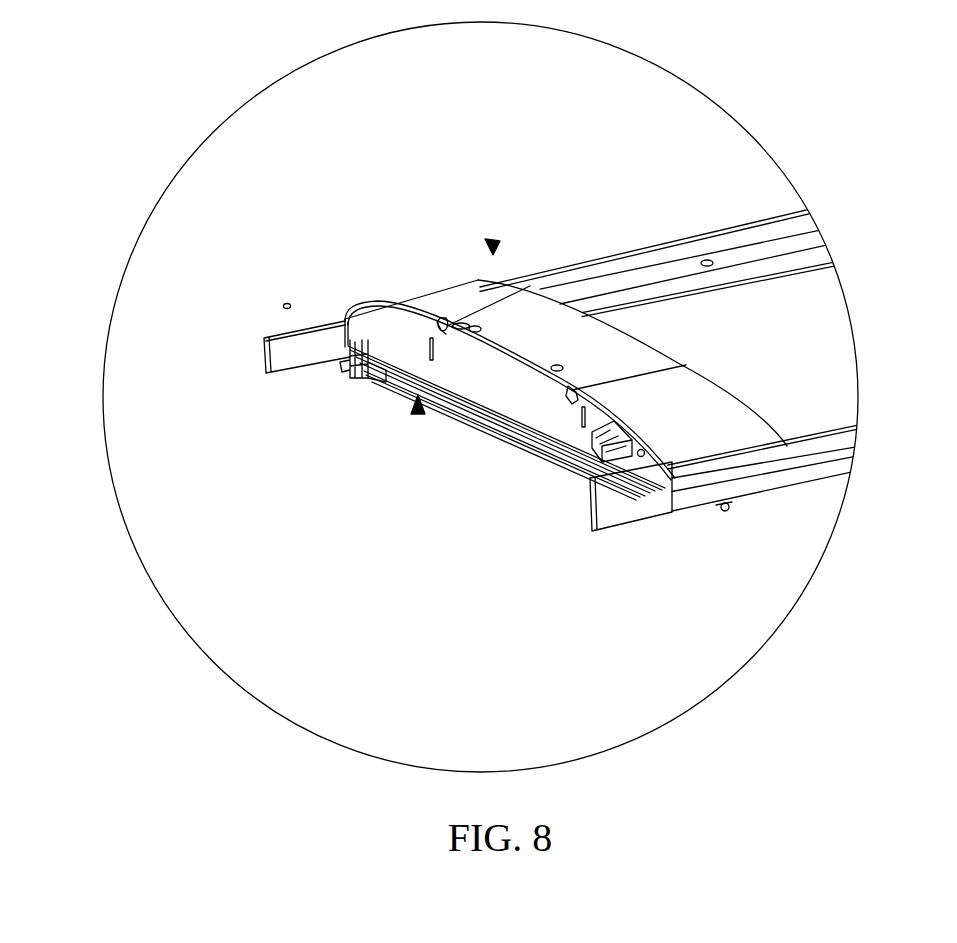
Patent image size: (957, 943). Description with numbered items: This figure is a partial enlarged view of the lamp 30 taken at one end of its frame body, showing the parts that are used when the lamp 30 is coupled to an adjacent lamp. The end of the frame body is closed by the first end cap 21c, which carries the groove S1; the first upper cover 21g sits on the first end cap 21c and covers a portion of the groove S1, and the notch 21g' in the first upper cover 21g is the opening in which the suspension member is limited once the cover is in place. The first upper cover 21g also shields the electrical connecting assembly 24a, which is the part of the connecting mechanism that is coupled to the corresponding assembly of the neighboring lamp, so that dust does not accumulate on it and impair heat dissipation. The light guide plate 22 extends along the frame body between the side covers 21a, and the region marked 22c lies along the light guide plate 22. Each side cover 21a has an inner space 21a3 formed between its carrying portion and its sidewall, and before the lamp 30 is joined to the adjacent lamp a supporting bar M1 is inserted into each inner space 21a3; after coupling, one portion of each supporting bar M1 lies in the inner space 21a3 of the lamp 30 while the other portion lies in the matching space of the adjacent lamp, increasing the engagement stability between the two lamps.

The lamp 30 is at (493, 243).
The side cover 21a is at (767, 478).
The first end cap 21c is at (369, 318).
The first upper cover 21g is at (432, 260).
The notch 21g' is at (514, 261).
The groove S1 is at (440, 318).
The supporting bar M1 is at (280, 348).
The inner space 21a3 is at (352, 362).
The light guide plate 22 is at (470, 420).
The gap / guide of sliding strip 22c is at (418, 414).
The electrical connecting assembly 24a is at (592, 450).